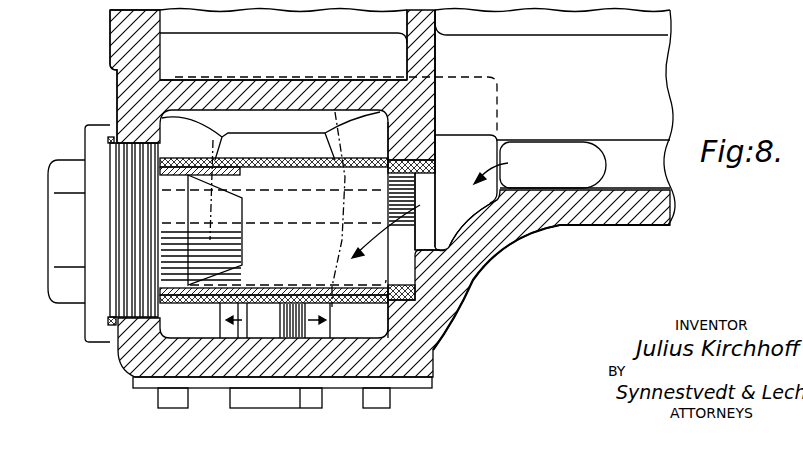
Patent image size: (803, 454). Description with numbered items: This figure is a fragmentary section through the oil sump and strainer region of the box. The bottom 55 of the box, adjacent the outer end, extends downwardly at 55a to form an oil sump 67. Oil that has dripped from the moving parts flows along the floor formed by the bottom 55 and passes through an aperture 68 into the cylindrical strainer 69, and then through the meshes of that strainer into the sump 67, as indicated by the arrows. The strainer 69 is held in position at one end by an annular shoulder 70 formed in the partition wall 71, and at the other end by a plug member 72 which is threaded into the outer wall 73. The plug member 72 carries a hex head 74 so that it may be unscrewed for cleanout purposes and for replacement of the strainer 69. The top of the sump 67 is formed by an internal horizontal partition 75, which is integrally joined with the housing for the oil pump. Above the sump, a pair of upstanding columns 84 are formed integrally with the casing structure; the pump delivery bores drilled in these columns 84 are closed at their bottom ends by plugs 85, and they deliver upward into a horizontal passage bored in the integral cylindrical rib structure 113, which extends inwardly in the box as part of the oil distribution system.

The bottom of the box 55 is at (604, 226).
The downwardly extending portion of the bottom 55a is at (326, 362).
The oil sump 67 is at (238, 330).
The aperture 68 is at (427, 237).
The cylindrical strainer 69 is at (347, 160).
The annular shoulder 70 is at (415, 295).
The partition wall 71 is at (432, 115).
The plug member 72 is at (243, 235).
The outer wall 73 is at (125, 93).
The hex head 74 is at (72, 292).
The internal horizontal partition 75 is at (270, 88).
The upstanding columns 84 is at (274, 320).
The plugs 85 is at (158, 400).
The integral cylindrical rib structure 113 is at (414, 38).